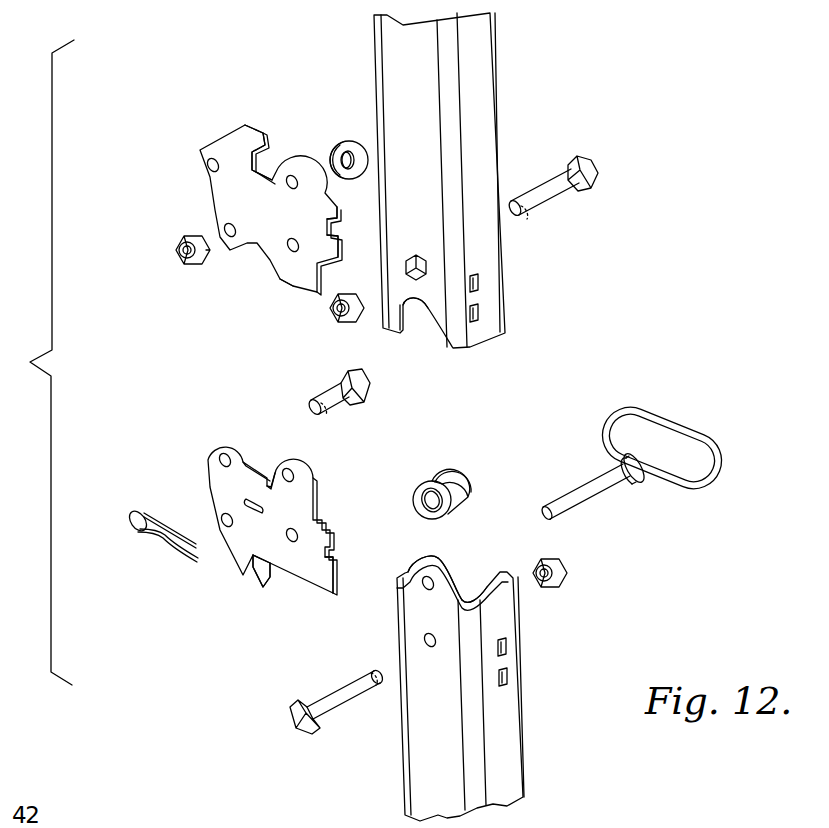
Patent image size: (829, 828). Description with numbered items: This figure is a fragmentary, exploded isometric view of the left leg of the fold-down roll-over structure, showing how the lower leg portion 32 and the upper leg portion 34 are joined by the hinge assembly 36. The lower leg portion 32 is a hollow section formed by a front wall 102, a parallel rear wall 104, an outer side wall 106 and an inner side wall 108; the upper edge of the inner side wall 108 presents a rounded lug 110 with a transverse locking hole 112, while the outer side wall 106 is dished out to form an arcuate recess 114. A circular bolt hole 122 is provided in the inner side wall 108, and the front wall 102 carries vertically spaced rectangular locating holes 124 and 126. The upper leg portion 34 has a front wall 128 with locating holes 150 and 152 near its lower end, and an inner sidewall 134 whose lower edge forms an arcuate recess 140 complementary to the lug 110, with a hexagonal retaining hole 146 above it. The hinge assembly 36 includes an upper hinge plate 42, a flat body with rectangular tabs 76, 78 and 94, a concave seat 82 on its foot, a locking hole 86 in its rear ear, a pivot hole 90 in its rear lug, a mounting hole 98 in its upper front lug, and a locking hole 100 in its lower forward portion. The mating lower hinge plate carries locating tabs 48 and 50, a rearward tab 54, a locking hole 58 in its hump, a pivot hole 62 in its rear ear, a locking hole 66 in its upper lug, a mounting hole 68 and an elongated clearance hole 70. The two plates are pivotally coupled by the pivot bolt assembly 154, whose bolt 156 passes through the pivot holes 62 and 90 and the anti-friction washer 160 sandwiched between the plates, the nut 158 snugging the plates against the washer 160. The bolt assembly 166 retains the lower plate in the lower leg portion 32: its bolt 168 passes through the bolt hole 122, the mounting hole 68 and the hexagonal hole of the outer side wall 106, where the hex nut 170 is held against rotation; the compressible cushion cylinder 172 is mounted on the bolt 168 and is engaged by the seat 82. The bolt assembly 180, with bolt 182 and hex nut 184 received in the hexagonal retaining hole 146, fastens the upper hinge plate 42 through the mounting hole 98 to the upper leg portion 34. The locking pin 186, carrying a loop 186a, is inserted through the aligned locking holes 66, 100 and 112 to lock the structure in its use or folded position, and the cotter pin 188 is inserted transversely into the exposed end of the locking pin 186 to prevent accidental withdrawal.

The lower leg portion 32 is at (470, 659).
The upper leg portion 34 is at (448, 196).
The hinge assembly 36 is at (272, 208).
The upper hinge plate 42 is at (275, 208).
The locating projection 48 is at (335, 592).
The locating projection 50 is at (273, 514).
The third forwardly extending projection 54 is at (268, 585).
The locking hole 58 is at (222, 517).
The pivot hole 62 is at (221, 458).
The locking hole 66 is at (295, 473).
The mounting hole 68 is at (298, 532).
The elongated clearance hole 70 is at (256, 503).
The forwardly extending projection 76 is at (340, 245).
The forwardly extending projection 78 is at (340, 207).
The concave seat 82 is at (295, 288).
The locking hole 86 is at (230, 240).
The pivot hole 90 is at (207, 161).
The forwardly extending projection 94 is at (272, 135).
The mounting hole 98 is at (290, 175).
The locking hole 100 is at (290, 250).
The front wall 102 is at (505, 746).
The rear wall 104 is at (413, 567).
The outer side wall 106 is at (458, 580).
The inner side wall 108 is at (420, 768).
The rounded lug 110 is at (412, 565).
The locking hole 112 is at (425, 590).
The arcuate recess 114 is at (470, 578).
The bolt hole 122 is at (425, 643).
The locating hole 124 is at (505, 678).
The locating hole 126 is at (505, 646).
The front wall 128 is at (480, 83).
The inner sidewall 134 is at (392, 34).
The arcuate recess 140 is at (425, 318).
The hexagonal retaining hole 146 is at (418, 254).
The locating hole 150 is at (480, 313).
The locating hole 152 is at (480, 282).
The pivot bolt assembly 154 is at (396, 402).
The bolt 156 is at (335, 400).
The nut 158 is at (185, 243).
The anti-friction washer 160 is at (345, 150).
The bolt assembly 166 is at (293, 711).
The bolt 168 is at (330, 693).
The hex nut 170 is at (565, 572).
The cushion cylinder 172 is at (445, 478).
The bolt assembly 180 is at (601, 175).
The bolt 182 is at (563, 190).
The hex nut 184 is at (340, 318).
The locking pin 186 is at (648, 456).
The loop 186a is at (665, 432).
The cotter pin 188 is at (133, 540).